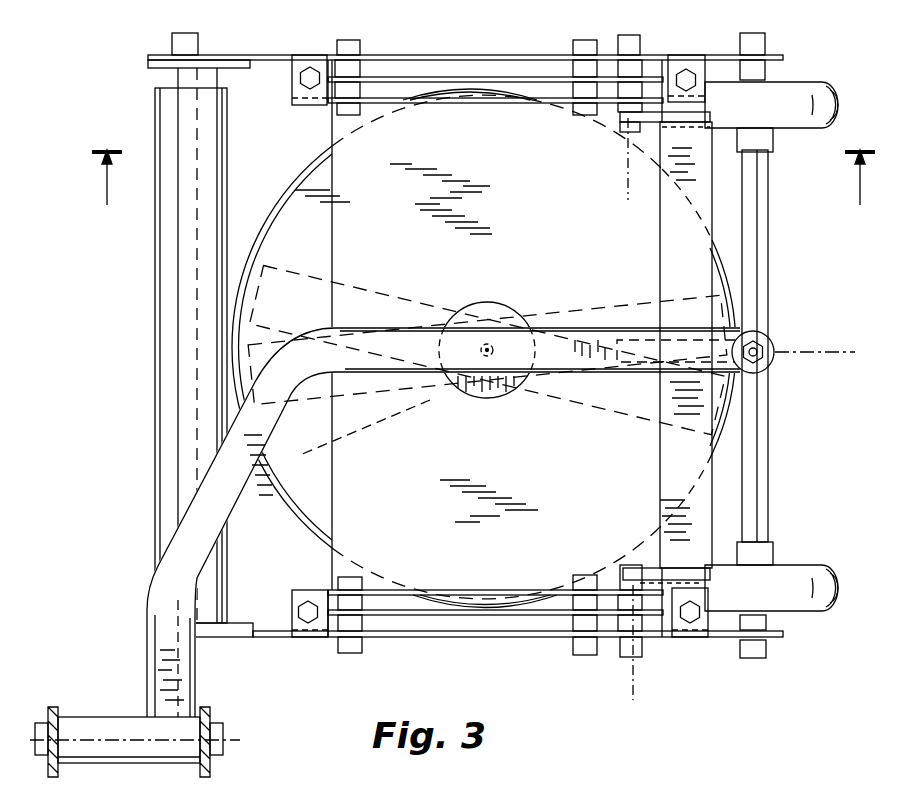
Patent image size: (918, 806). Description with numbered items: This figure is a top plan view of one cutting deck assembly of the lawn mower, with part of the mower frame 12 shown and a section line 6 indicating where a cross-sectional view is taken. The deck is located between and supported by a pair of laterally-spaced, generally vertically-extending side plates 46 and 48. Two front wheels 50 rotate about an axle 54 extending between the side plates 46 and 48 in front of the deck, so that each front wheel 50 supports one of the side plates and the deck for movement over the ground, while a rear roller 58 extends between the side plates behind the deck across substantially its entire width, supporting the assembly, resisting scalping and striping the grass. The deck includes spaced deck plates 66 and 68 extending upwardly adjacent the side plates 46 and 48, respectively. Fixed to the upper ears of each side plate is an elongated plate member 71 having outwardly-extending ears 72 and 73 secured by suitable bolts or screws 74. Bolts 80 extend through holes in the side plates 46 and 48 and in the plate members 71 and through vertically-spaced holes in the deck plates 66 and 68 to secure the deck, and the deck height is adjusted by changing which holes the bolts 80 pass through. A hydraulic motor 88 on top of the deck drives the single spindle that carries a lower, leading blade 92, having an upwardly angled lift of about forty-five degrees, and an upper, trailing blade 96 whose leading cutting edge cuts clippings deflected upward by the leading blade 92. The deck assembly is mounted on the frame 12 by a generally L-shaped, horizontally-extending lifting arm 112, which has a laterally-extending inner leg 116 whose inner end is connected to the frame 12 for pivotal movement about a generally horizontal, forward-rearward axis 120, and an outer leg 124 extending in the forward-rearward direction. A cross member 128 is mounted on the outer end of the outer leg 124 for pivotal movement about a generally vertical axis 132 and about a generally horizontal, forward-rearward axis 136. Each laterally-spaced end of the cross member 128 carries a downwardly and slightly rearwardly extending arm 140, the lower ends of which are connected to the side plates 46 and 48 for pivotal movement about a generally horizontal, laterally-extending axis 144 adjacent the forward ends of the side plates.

The section line 6- 6 is at (483, 193).
The frame 12 is at (58, 712).
The side plate 46 is at (460, 54).
The side plate 48 is at (505, 637).
The front wheel 50 is at (803, 130).
The axle 54 is at (760, 468).
The rear roller 58 is at (157, 396).
The deck plate 66 is at (502, 77).
The deck plate 68 is at (410, 615).
The plate member 71 is at (503, 104).
The ear 72 is at (677, 58).
The ear 73 is at (302, 55).
The bolts or screws 74 is at (302, 78).
The bolts 80 is at (350, 46).
The hydraulic motor 88 is at (497, 392).
The leading blade 92 is at (320, 252).
The trailing blade 96 is at (437, 403).
The lifting arm 112 is at (275, 438).
The inner leg 116 is at (180, 689).
The horizontal axis 120 is at (92, 742).
The outer leg 124 is at (605, 328).
The cross member 128 is at (678, 463).
The vertical axis 132 is at (768, 346).
The horizontal axis 136 is at (812, 358).
The arm 140 is at (650, 128).
The horizontal axis 144 is at (628, 186).